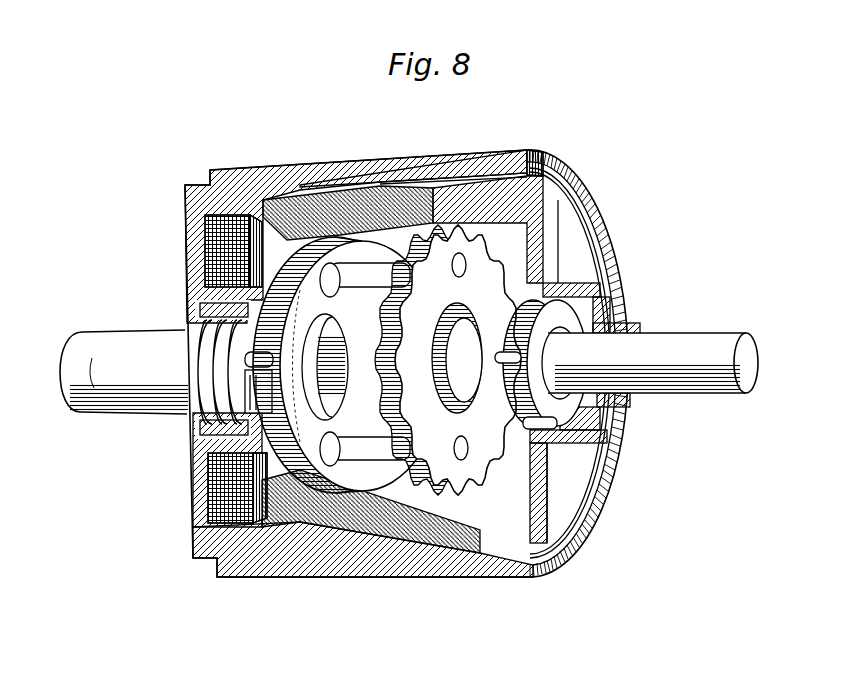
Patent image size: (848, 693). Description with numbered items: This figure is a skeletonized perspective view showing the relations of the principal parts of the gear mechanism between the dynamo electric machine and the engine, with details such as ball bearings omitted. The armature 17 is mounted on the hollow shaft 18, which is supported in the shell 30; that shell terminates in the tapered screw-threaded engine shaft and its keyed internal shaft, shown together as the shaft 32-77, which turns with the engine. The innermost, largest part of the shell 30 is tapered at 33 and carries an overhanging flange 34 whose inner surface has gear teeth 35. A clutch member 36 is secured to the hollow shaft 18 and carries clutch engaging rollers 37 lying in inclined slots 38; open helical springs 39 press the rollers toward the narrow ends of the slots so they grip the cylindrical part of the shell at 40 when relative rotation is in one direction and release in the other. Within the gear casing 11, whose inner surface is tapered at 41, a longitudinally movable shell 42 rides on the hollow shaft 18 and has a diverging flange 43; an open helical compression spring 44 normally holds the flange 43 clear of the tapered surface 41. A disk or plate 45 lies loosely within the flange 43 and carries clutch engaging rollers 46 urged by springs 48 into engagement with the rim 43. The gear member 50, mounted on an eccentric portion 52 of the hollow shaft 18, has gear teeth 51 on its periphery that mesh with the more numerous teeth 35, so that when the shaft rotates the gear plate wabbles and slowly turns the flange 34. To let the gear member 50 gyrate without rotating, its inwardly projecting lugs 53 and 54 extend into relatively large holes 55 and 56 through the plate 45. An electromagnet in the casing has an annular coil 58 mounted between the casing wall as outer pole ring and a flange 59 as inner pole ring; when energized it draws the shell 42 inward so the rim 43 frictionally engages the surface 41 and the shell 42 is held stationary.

The annular coil 58 is at (183, 222).
The flange 59 is at (203, 267).
The open helical compression spring 44 is at (187, 323).
The armature 17 is at (200, 333).
The hollow shaft 18 is at (132, 396).
The clutch engaging rollers 46 is at (215, 378).
The springs 48 is at (262, 375).
The disk or plate 45 is at (193, 522).
The inwardly projecting lug 54 is at (248, 552).
The hole or orifice 56 is at (330, 527).
The gear teeth 51 is at (404, 470).
The gear member 50 is at (440, 447).
The gear teeth 35 is at (458, 560).
The open helical springs 39 is at (547, 562).
The surrounding cylindrical part of the shell 40 is at (560, 430).
The inclined slots 38 is at (605, 408).
The clutch member 36 is at (605, 325).
The clutch engaging roller 37 is at (605, 278).
The shell 30 is at (548, 272).
The eccentric portion of the shaft 52 is at (545, 220).
The diverging flange 43 is at (550, 157).
The tapered inner surface 41 is at (510, 150).
The tapered portion 33 is at (463, 157).
The overhanging flange 34 is at (420, 157).
The inwardly projecting lug 53 is at (375, 260).
The gear casing 11 is at (312, 212).
The hole or orifice 55 is at (272, 238).
The longitudinally movable shell 42 is at (297, 240).
The engine shaft and internal shaft 32-77 is at (690, 333).